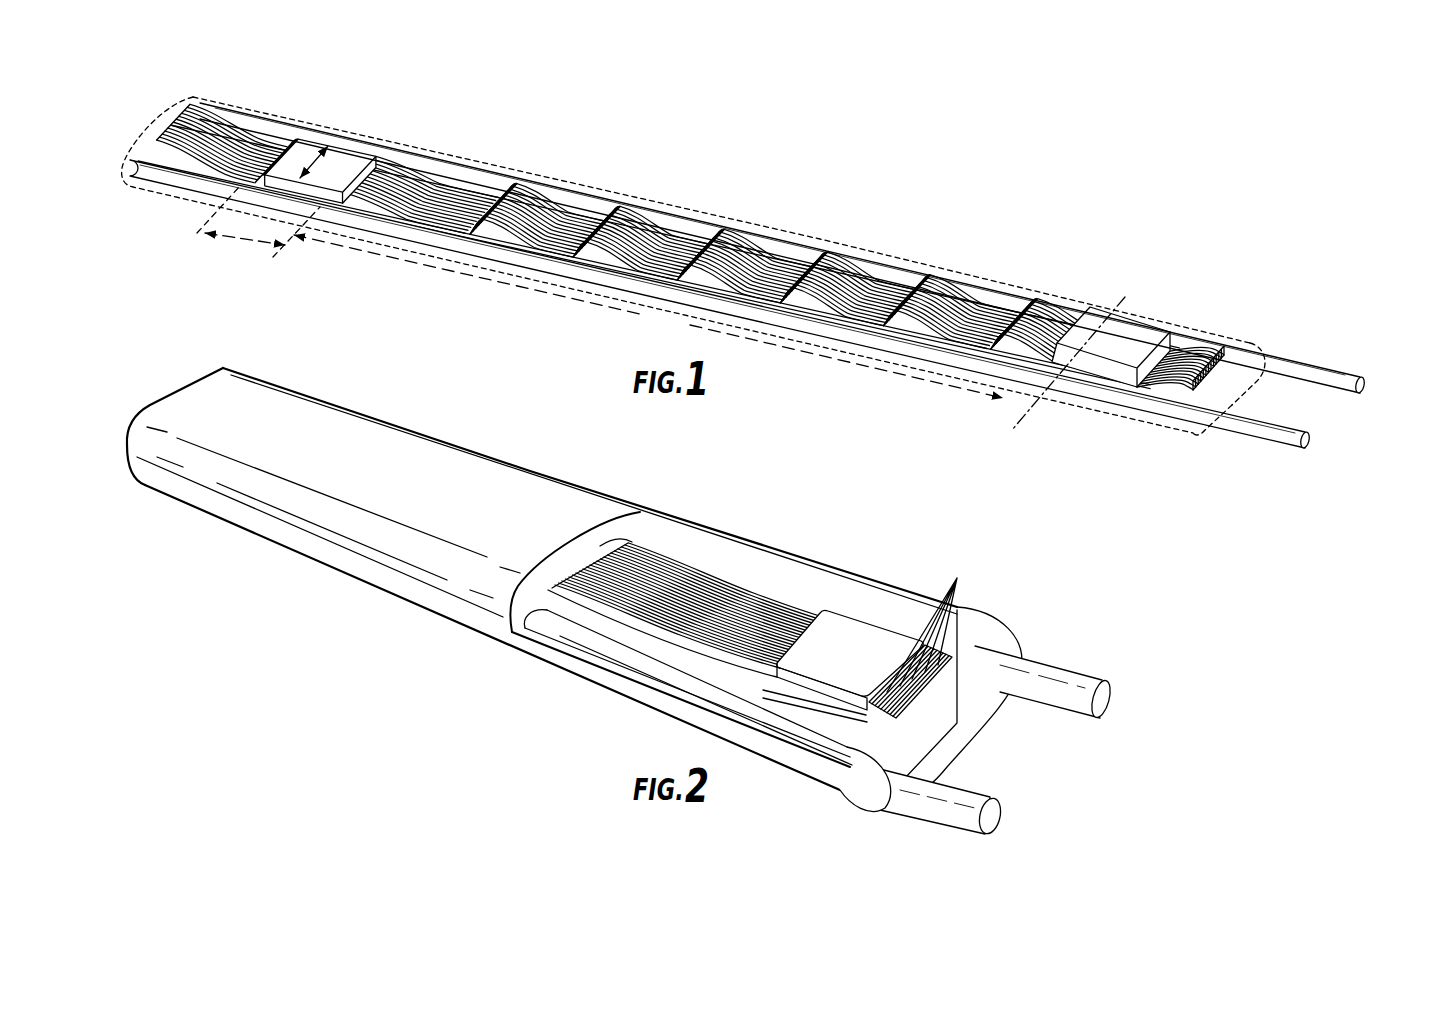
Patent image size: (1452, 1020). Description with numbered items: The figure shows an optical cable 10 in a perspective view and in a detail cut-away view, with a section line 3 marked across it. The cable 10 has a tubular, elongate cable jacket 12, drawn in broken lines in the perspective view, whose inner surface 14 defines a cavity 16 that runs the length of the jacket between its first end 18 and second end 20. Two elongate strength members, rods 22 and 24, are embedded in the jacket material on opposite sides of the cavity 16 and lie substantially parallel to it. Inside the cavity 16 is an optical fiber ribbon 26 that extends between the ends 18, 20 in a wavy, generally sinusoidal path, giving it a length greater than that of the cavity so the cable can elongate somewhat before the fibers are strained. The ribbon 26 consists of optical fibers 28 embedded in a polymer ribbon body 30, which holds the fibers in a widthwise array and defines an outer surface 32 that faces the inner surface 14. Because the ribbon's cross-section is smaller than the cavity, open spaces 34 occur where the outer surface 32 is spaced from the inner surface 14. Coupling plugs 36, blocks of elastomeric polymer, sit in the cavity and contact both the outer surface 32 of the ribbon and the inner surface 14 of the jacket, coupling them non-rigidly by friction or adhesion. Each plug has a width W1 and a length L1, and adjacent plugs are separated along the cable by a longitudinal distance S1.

In FIG. 1, the cable 10 is at (768, 281).
In FIG. 2, the cable 10 is at (646, 618).
In FIG. 1, the cable jacket 12 is at (1242, 340).
In FIG. 2, the cable jacket 12 is at (985, 630).
In FIG. 2, the inner surface 14 is at (810, 638).
In FIG. 1, the cavity 16 is at (1243, 400).
In FIG. 2, the cavity 16 is at (903, 738).
In FIG. 1, the first end 18 is at (777, 296).
In FIG. 1, the second end 20 is at (160, 110).
In FIG. 1, the rod 22 is at (1312, 443).
In FIG. 2, the rod 22 is at (997, 818).
In FIG. 1, the rod 24 is at (1370, 384).
In FIG. 2, the rod 24 is at (1118, 700).
In FIG. 1, the optical fiber ribbon 26 is at (681, 244).
In FIG. 2, the optical fiber ribbon 26 is at (735, 638).
In FIG. 2, the optical fibers 28 is at (930, 619).
In FIG. 2, the polymer ribbon body 30 is at (848, 800).
In FIG. 2, the outer surface 32 is at (645, 583).
In FIG. 1, the spaces 34 is at (932, 305).
In FIG. 1, the coupling plugs 36 is at (337, 158).
In FIG. 2, the coupling plugs 36 is at (818, 665).
In FIG. 1, the section line 3- 3 is at (1125, 297).
In FIG. 1, the width W1 is at (312, 164).
In FIG. 1, the length L1 is at (258, 226).
In FIG. 1, the longitudinal separation distance S1 is at (648, 316).